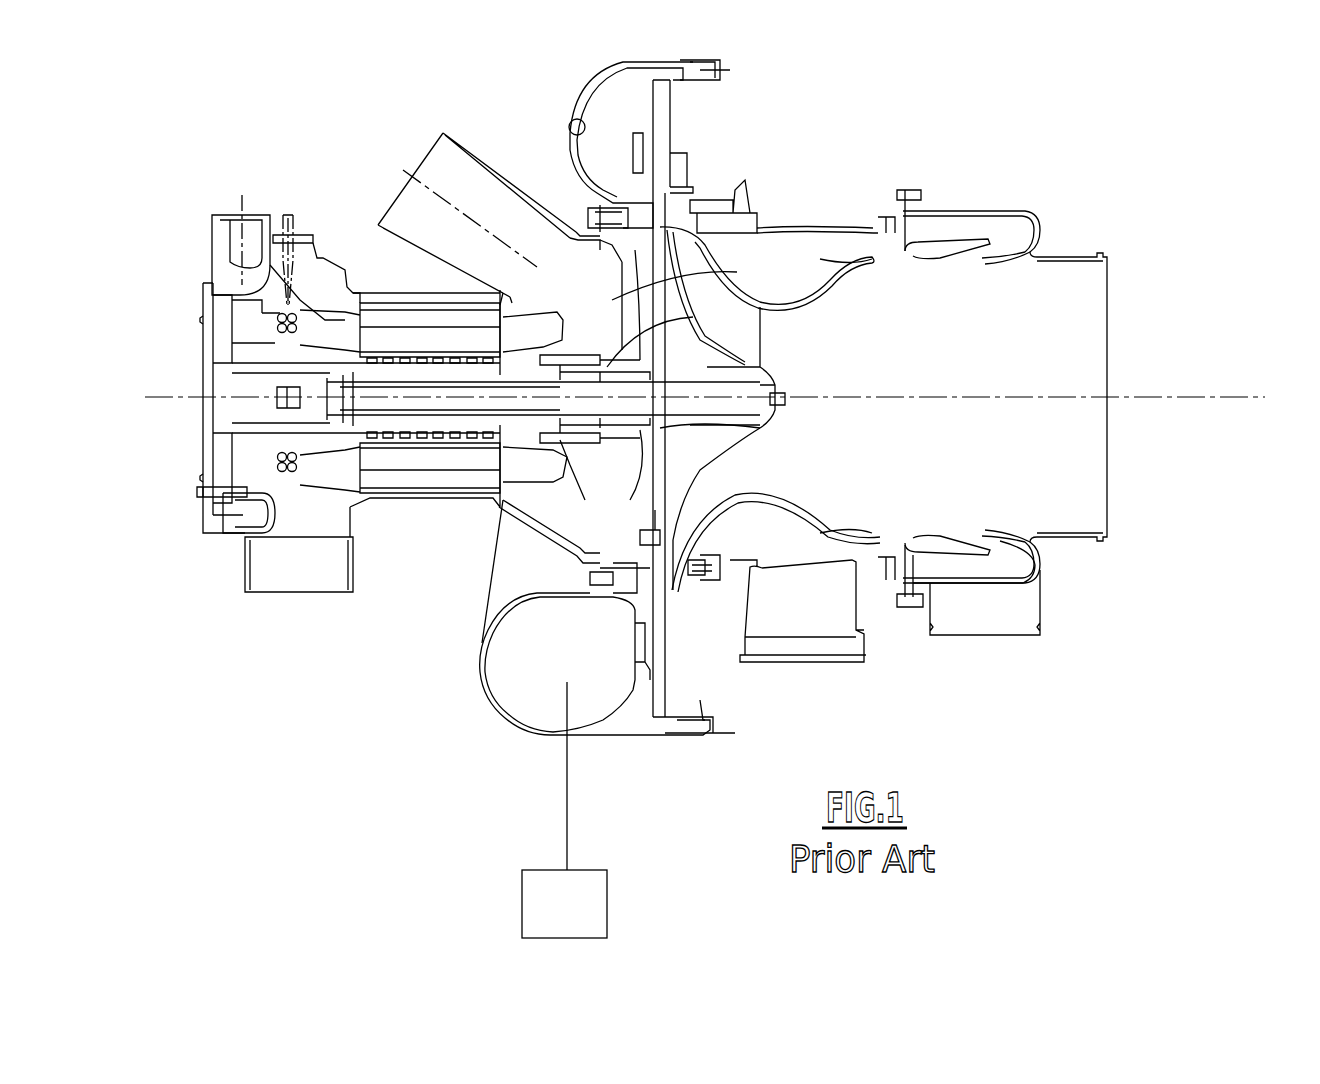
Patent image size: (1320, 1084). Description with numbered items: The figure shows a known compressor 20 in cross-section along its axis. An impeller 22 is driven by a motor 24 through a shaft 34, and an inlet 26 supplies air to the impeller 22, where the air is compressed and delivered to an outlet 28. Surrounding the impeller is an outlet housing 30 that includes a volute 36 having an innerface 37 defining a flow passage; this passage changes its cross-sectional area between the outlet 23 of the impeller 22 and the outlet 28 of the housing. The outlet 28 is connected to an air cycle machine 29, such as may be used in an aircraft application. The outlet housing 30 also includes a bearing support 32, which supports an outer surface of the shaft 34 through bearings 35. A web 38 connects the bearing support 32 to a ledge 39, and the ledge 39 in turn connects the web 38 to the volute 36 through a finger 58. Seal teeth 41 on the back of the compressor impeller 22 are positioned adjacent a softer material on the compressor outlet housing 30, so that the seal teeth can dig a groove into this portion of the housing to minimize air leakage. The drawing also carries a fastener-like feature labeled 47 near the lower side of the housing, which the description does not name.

The compressor 20 is at (1052, 190).
The impeller 22 is at (693, 355).
The outlet of the impeller 23 is at (695, 242).
The motor 24 is at (365, 450).
The inlet 26 is at (1016, 387).
The outlet 28 is at (527, 687).
The air cycle machine 29 is at (607, 903).
The outlet housing 30 is at (480, 650).
The bearing support 32 is at (563, 457).
The shaft 34 is at (572, 355).
The bearings 35 is at (664, 334).
The volute 36 is at (583, 105).
The innerface 37 is at (570, 128).
The web 38 is at (690, 279).
The ledge 39 is at (740, 490).
The seal teeth 41 is at (647, 533).
The backplate fastener 47 is at (667, 587).
The finger 58 is at (607, 207).